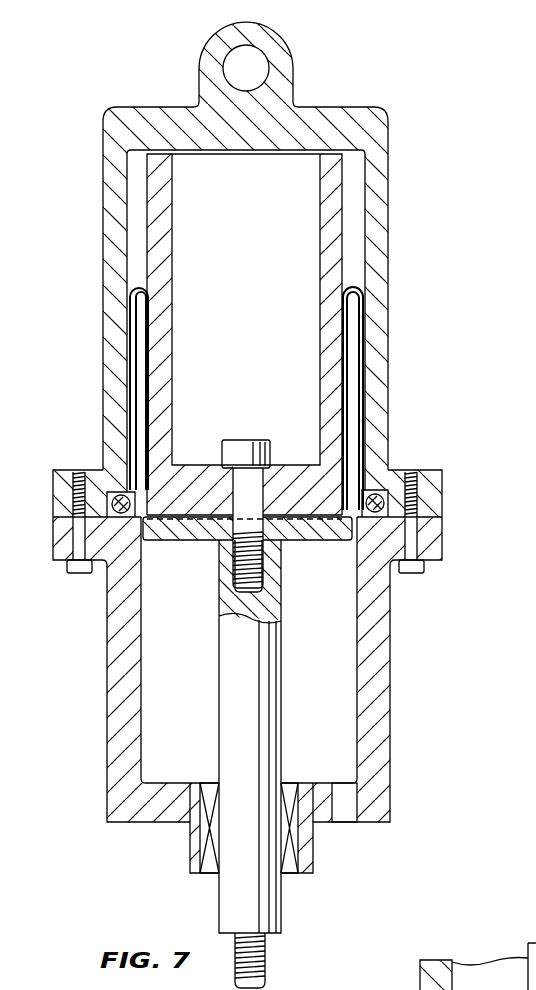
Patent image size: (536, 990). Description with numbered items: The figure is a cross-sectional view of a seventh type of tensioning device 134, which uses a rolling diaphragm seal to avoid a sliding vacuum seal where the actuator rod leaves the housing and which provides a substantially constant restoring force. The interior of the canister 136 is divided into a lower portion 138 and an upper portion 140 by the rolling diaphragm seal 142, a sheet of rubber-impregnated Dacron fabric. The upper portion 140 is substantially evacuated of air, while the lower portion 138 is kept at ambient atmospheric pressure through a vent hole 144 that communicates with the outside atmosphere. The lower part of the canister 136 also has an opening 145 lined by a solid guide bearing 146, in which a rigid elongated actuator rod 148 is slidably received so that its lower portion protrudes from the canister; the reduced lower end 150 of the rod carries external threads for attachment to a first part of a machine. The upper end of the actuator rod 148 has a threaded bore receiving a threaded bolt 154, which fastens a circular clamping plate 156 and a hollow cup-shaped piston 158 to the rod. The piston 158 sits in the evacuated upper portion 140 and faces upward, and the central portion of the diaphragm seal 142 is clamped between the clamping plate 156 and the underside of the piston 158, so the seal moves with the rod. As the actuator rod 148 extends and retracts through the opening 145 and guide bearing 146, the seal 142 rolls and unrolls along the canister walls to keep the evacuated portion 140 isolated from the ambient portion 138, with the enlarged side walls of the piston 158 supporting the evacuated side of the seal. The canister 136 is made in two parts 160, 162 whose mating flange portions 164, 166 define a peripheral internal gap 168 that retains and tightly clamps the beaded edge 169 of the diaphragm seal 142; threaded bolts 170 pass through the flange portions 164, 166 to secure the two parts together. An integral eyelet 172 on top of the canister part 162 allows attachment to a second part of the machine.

The tensioning device 134 is at (135, 853).
The canister 136 is at (426, 600).
The lower portion of the canister 138 is at (195, 678).
The upper portion of the canister 140 is at (137, 213).
The rolling diaphragm seal 142 is at (348, 290).
The vent hole 144 is at (345, 812).
The opening 145 is at (300, 847).
The guide bearing 146 is at (207, 872).
The actuator rod 148 is at (256, 667).
The reduced lower end 150 is at (267, 957).
The threaded bolt 154 is at (236, 448).
The clamping plate 156 is at (306, 532).
The piston 158 is at (327, 427).
The canister part 160 is at (113, 695).
The canister part 162 is at (110, 287).
The flange portion 164 is at (58, 542).
The flange portion 166 is at (62, 480).
The peripheral internal gap 168 is at (118, 494).
The beaded edge 169 is at (382, 495).
The threaded bolts 170 is at (92, 590).
The eyelet 172 is at (272, 45).